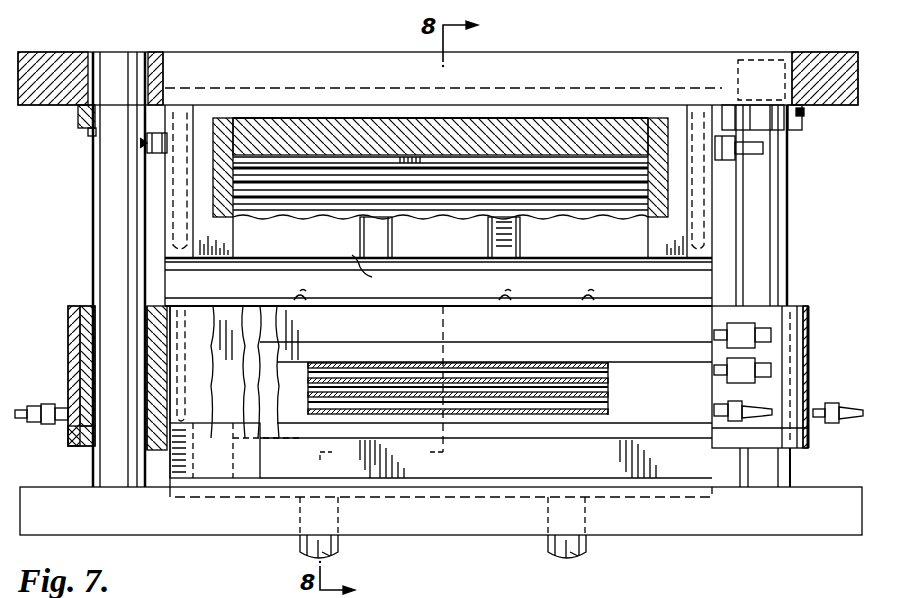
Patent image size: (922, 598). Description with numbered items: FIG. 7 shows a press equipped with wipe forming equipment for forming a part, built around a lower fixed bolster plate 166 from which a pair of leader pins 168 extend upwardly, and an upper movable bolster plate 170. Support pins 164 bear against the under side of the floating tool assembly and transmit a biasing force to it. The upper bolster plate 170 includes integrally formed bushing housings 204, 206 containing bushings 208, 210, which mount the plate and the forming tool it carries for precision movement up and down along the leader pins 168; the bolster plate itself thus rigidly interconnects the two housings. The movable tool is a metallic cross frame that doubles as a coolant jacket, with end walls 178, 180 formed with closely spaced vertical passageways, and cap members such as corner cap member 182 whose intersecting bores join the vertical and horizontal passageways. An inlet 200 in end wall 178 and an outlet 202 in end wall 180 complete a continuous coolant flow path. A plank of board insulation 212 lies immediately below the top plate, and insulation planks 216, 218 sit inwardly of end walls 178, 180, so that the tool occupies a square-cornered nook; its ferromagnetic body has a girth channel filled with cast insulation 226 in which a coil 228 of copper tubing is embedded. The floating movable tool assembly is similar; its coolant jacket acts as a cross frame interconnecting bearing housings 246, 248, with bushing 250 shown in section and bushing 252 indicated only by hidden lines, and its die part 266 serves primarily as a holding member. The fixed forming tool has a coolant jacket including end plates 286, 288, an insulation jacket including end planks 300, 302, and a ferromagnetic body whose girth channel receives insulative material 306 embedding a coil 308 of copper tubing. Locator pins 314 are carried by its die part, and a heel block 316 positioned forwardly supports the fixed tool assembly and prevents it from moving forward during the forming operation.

The support pin 164 is at (338, 548).
The lower fixed bolster plate 166 is at (656, 536).
The leader pins 168 is at (106, 263).
The upper movable bolster plate 170 is at (258, 64).
The end wall 178 is at (186, 190).
The end wall 180 is at (708, 187).
The corner cap member 182 is at (180, 228).
The inlet 200 is at (146, 146).
The outlet 202 is at (750, 152).
The bushing housing 204 is at (80, 116).
The bushing housing 206 is at (803, 126).
The bushing 208 is at (82, 130).
The bushing 210 is at (784, 138).
The plank of board insulation 212 is at (396, 128).
The insulation plank 216 is at (226, 122).
The insulation plank 218 is at (658, 124).
The insulation 226 is at (640, 208).
The coil 228 is at (554, 210).
The bearing housing 246 is at (72, 345).
The bearing housing 248 is at (808, 370).
The bushing 250 is at (84, 378).
The bushing 252 is at (818, 404).
The die part 266 is at (370, 278).
The end plate 286 is at (190, 426).
The end plate 288 is at (712, 324).
The end plank 300 is at (234, 306).
The end plank 302 is at (668, 306).
The insulative material 306 is at (496, 360).
The coil 308 is at (352, 366).
The locator pins 314 is at (302, 296).
The heel block 316 is at (220, 474).